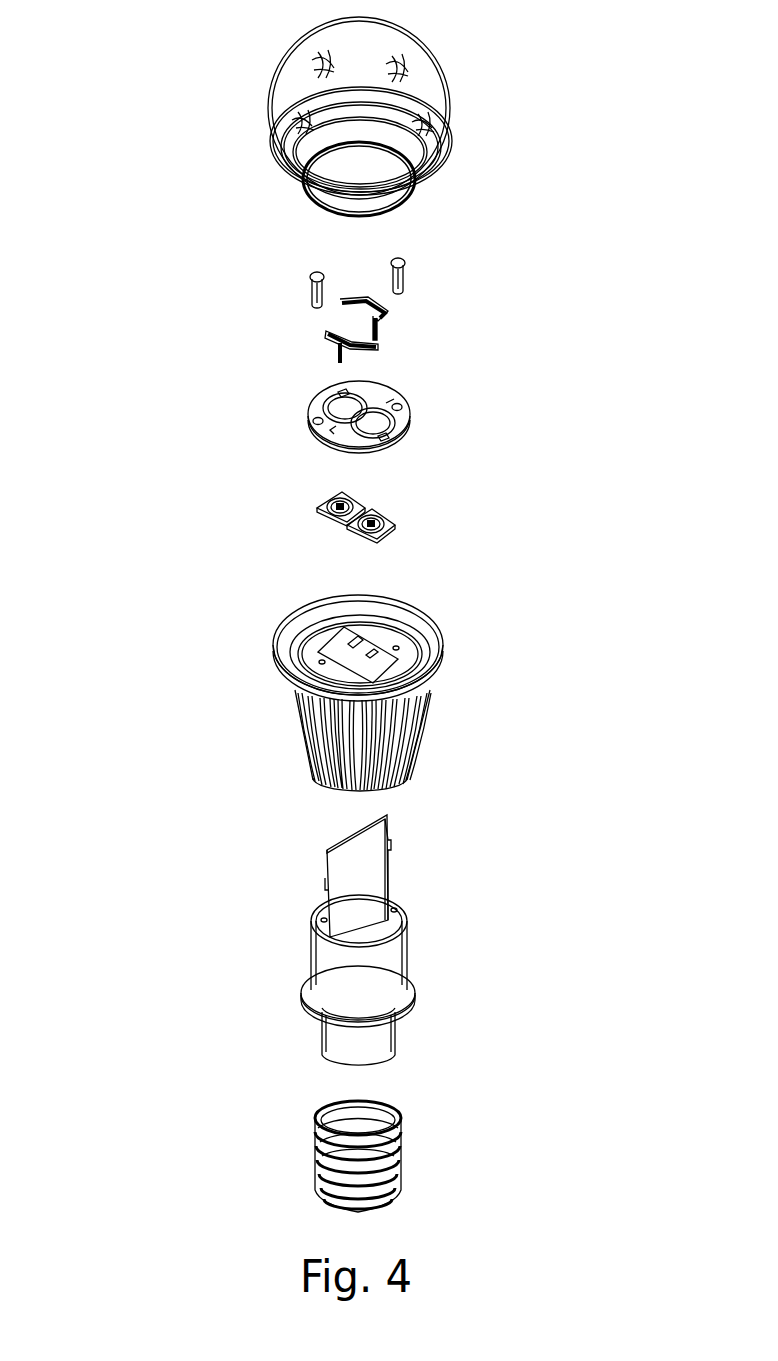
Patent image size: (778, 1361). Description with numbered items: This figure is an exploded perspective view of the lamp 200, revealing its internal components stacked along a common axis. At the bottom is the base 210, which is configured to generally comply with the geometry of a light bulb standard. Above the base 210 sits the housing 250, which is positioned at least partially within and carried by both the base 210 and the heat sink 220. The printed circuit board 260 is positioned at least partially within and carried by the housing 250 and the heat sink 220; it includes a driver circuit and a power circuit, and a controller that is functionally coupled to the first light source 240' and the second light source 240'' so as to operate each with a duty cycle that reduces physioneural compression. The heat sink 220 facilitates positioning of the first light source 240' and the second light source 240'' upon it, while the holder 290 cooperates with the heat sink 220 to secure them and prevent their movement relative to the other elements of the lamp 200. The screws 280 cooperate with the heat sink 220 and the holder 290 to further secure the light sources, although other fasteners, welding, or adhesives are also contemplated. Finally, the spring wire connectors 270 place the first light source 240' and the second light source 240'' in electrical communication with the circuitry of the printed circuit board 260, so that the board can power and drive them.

The lamp 200 is at (103, 144).
The base 210 is at (317, 1117).
The heat sink 220 is at (300, 743).
The first light source 240' is at (298, 491).
The second light source 240'' is at (418, 516).
The housing 250 is at (332, 973).
The printed circuit board (PCB) 260 is at (325, 852).
The spring wire connectors 270 is at (377, 345).
The screws 280 is at (392, 283).
The holder 290 is at (313, 405).